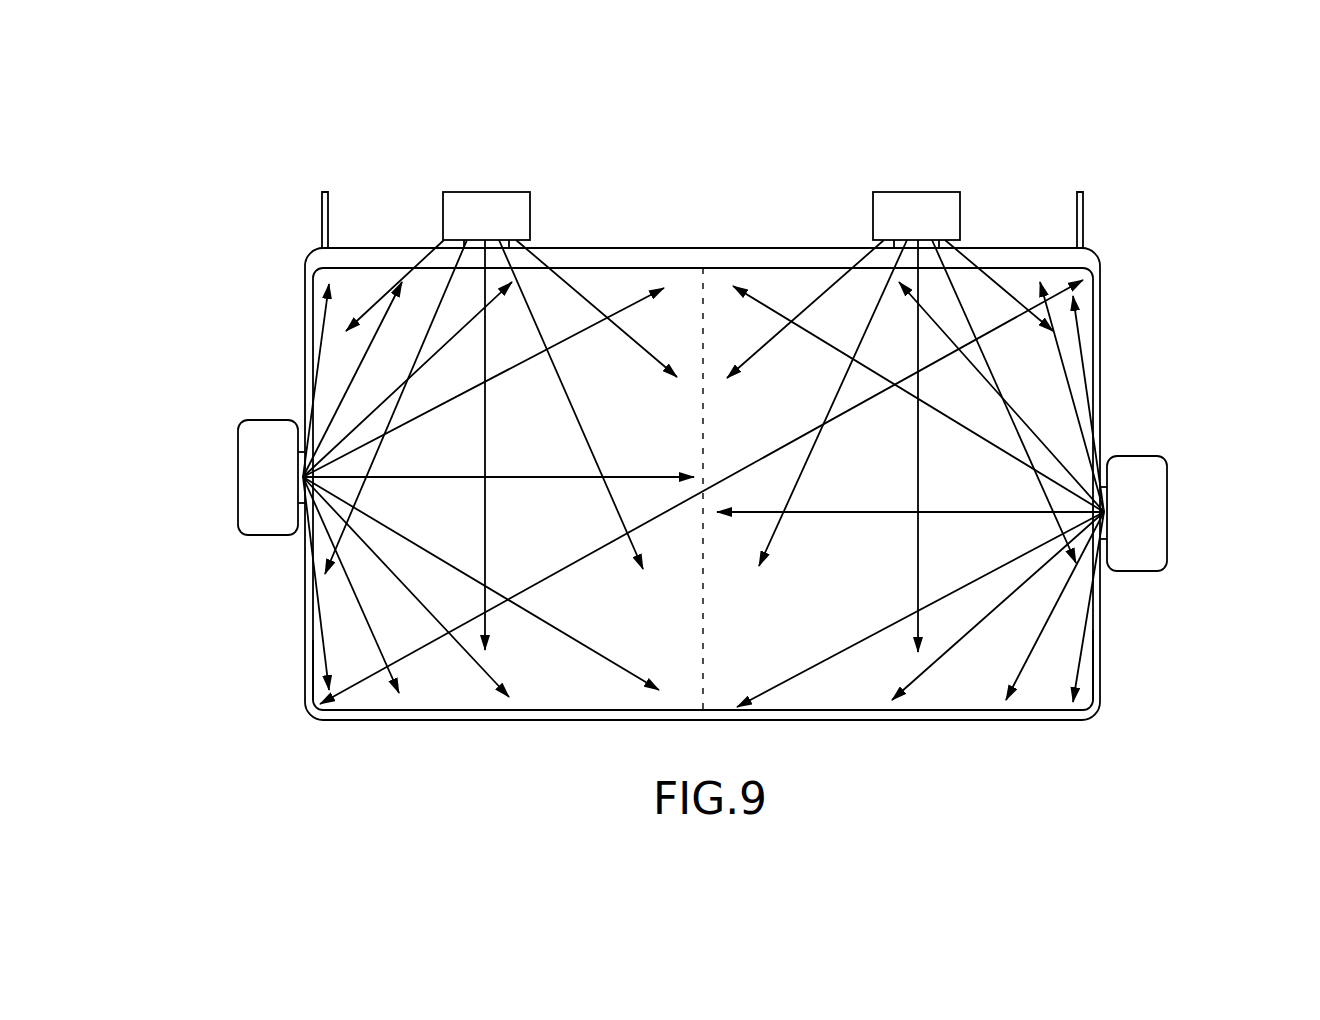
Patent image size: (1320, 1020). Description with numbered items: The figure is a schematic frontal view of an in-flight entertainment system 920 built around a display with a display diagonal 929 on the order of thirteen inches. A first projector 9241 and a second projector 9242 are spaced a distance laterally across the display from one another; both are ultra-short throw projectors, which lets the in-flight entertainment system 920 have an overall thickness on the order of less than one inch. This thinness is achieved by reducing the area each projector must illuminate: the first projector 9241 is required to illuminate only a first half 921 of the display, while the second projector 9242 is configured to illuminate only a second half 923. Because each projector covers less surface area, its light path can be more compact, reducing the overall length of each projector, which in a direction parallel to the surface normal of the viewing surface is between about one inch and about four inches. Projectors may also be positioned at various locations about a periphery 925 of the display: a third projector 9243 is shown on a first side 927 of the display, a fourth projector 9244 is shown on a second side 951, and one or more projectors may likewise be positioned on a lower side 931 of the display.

The in-flight entertainment system 920 is at (248, 177).
The first projector 9241 is at (493, 192).
The second projector 9242 is at (930, 192).
The third projector 9243 is at (238, 478).
The fourth projector 9244 is at (1167, 515).
The first side 927 is at (318, 353).
The second side 951 is at (1093, 351).
The display diagonal 929 is at (540, 581).
The first half 921 is at (688, 653).
The second half 923 is at (758, 653).
The periphery 925 is at (320, 658).
The lower side 931 is at (522, 705).